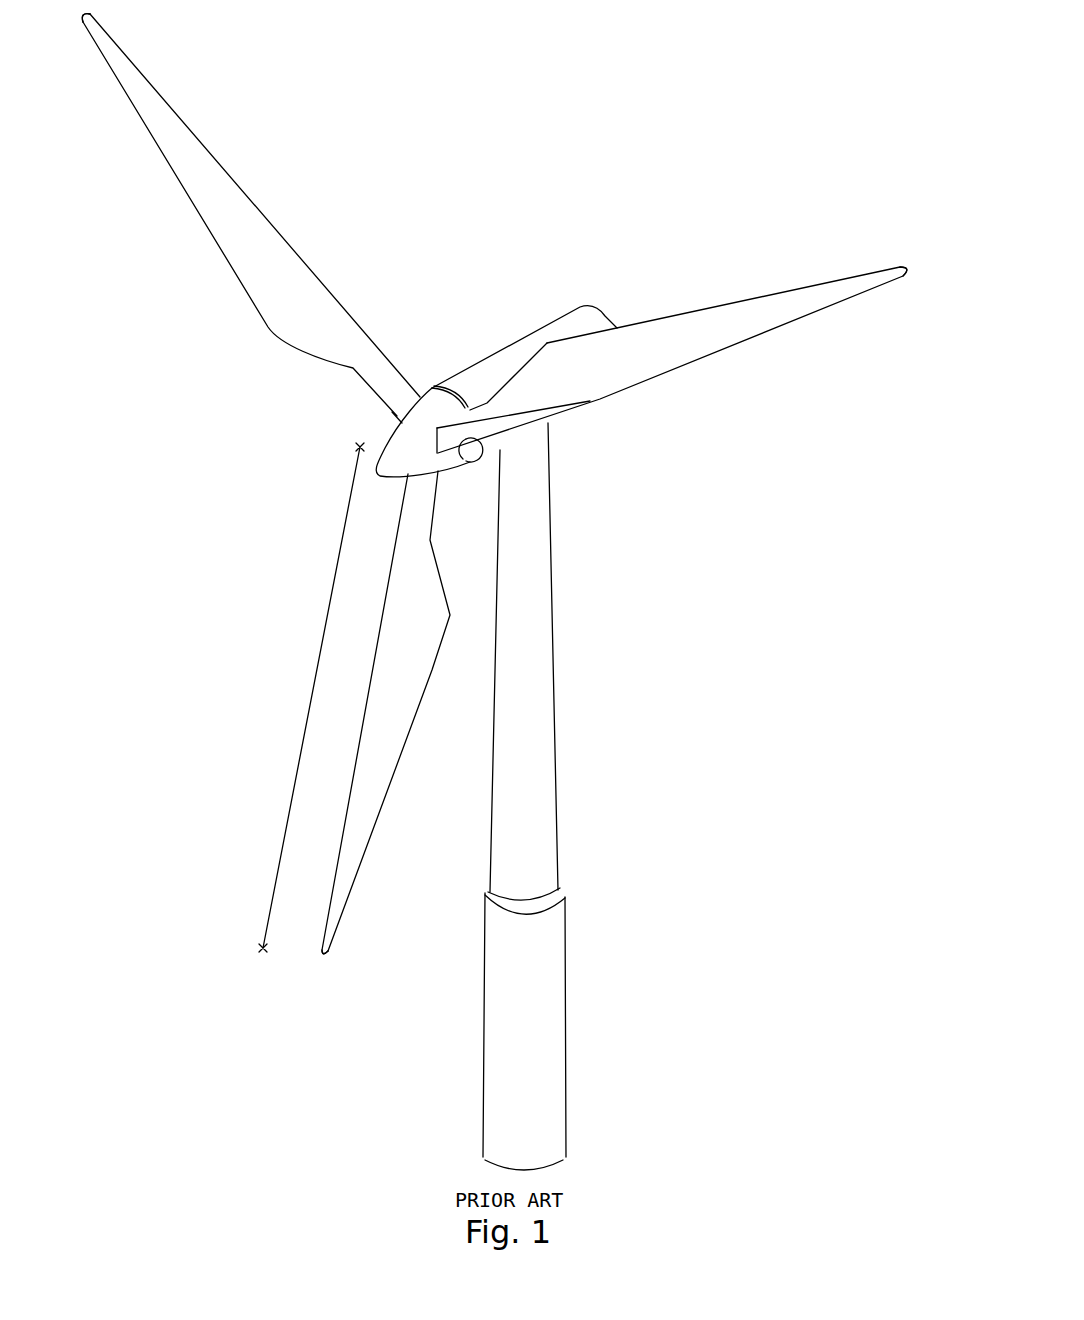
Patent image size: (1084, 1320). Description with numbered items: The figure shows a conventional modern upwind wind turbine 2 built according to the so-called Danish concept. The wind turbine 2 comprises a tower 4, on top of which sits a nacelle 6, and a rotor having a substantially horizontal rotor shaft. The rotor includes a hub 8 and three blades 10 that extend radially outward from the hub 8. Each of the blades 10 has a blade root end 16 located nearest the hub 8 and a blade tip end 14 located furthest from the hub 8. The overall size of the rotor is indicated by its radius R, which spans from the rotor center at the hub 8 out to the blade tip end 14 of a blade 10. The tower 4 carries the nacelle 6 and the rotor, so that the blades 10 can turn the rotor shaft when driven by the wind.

The wind turbine 2 is at (494, 592).
The tower 4 is at (543, 662).
The nacelle 6 is at (485, 366).
The hub 8 is at (385, 438).
The blades 10 is at (283, 305).
The blade tip end 14 is at (128, 68).
The blade root end 16 is at (395, 413).
The radius R is at (311, 697).